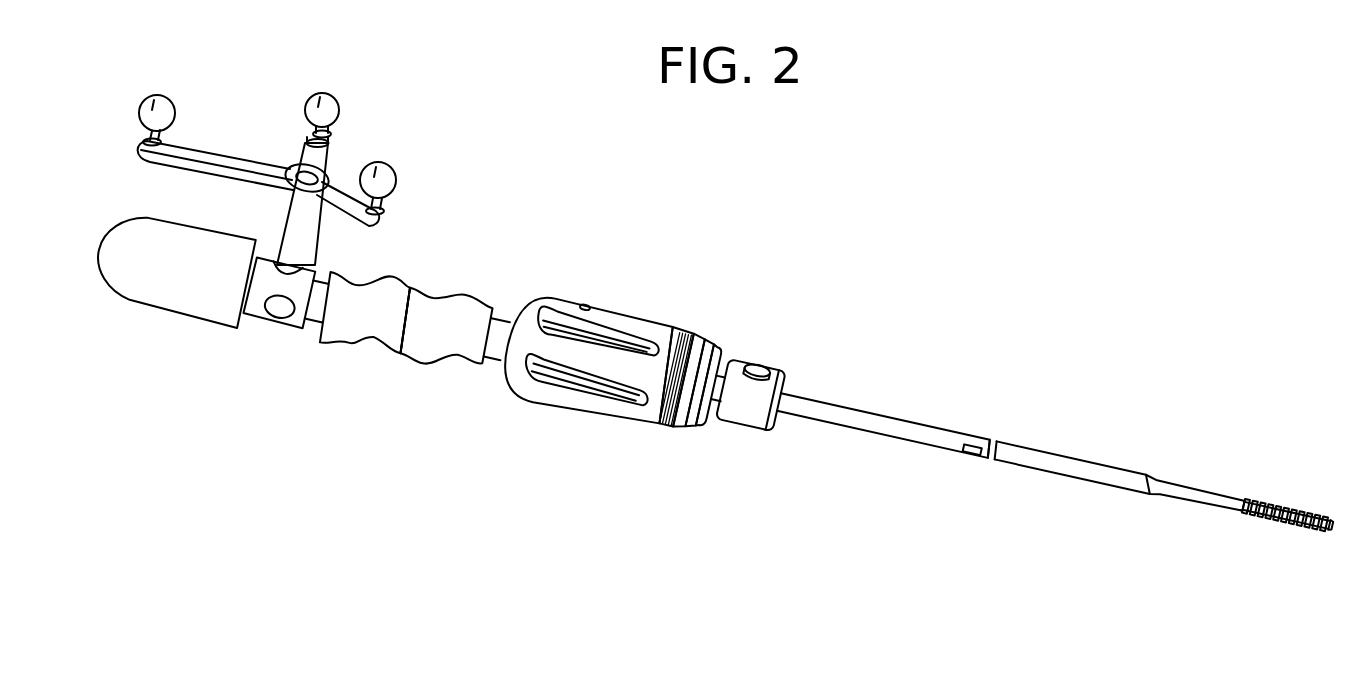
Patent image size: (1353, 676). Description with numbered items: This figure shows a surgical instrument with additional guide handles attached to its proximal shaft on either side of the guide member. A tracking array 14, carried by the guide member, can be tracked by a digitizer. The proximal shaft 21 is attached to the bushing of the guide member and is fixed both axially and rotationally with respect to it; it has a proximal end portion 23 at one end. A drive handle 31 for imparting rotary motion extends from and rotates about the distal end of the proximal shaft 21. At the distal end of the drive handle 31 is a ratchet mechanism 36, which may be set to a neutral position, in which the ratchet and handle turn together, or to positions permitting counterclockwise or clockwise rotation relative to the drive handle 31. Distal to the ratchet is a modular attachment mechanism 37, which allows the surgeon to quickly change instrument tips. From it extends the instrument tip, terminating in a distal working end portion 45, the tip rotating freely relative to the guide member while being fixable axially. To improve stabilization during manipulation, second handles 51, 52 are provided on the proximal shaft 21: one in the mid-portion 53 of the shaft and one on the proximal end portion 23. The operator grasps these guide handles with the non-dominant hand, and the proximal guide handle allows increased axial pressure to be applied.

The tracking array 14 is at (284, 156).
The proximal shaft 21 is at (407, 358).
The proximal end portion 23 is at (243, 313).
The drive handle 31 is at (594, 290).
The ratchet mechanism 36 is at (701, 322).
The modular attachment mechanism 37 is at (789, 418).
The distal working end portion 45 is at (1292, 531).
The second handle 51 is at (167, 298).
The second handle 52 is at (437, 337).
The mid-portion 53 is at (441, 284).